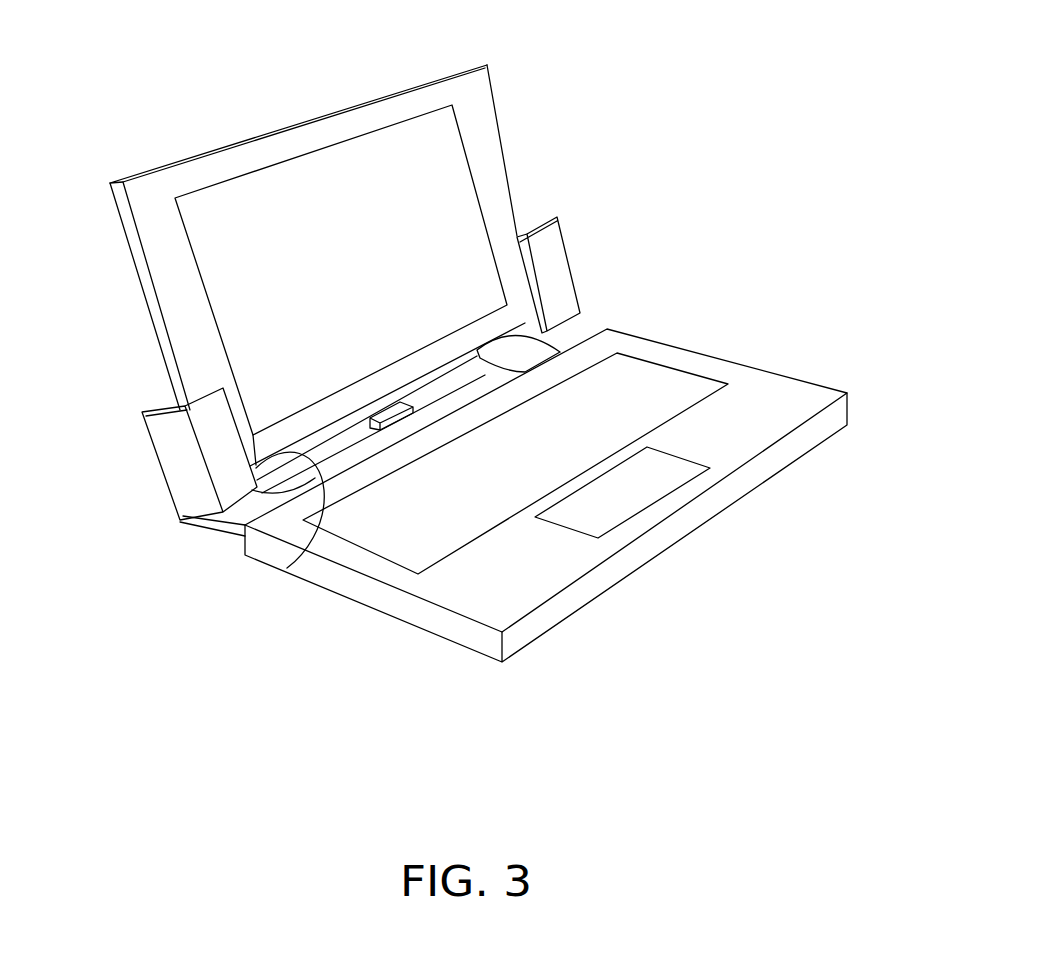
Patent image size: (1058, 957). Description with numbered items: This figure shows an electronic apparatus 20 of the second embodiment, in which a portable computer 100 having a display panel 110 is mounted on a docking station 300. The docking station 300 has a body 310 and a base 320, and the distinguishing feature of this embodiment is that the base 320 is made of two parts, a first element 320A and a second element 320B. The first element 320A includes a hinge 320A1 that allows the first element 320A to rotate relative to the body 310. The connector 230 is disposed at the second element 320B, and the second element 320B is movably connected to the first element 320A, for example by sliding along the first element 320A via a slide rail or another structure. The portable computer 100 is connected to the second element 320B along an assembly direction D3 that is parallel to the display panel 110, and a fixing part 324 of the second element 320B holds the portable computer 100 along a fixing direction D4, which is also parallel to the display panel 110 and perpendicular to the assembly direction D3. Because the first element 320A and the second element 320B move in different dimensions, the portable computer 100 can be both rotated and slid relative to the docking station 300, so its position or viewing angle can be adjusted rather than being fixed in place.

The electronic apparatus 20 is at (841, 644).
The portable computer 100 is at (268, 148).
The display panel 110 is at (405, 192).
The fixing part 324 is at (174, 394).
The assembly direction D3 is at (150, 349).
The fixing direction D4 is at (178, 459).
The docking station 300 is at (481, 708).
The body 310 is at (353, 586).
The base 320 is at (215, 608).
The first element 320A is at (207, 530).
The second element 320B is at (183, 493).
The hinge 320A1 is at (313, 480).
The connector 230 is at (400, 418).